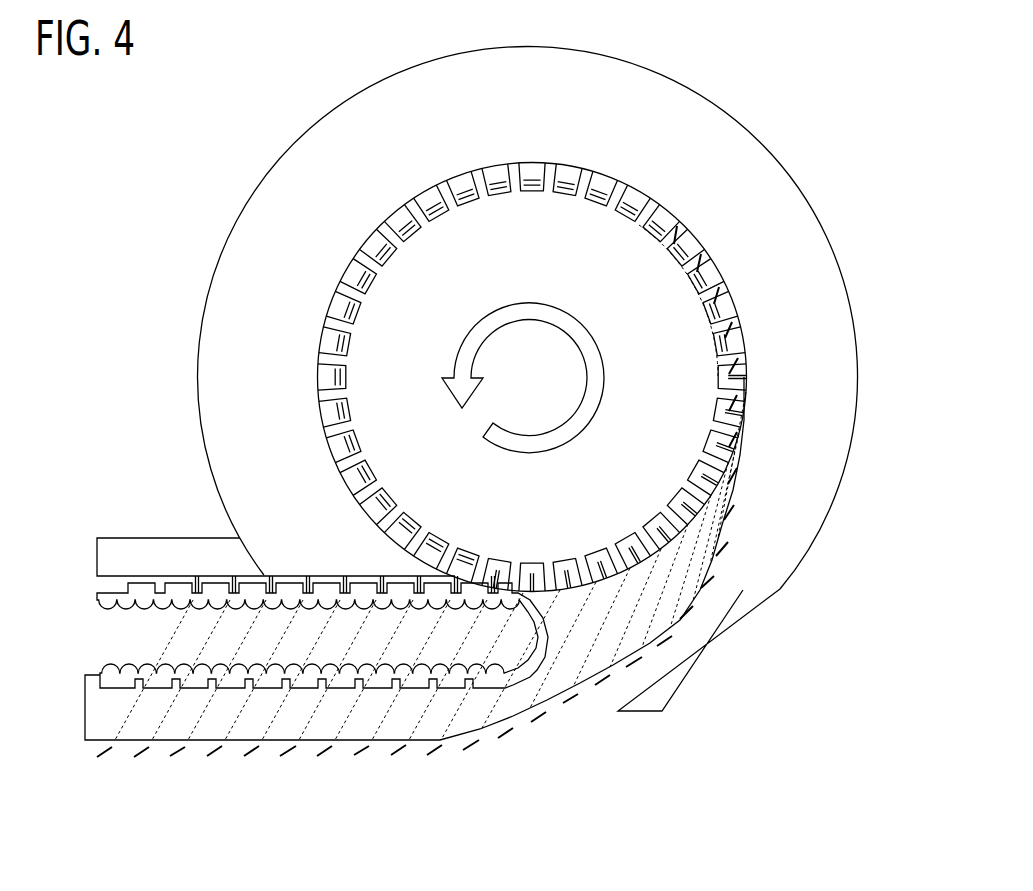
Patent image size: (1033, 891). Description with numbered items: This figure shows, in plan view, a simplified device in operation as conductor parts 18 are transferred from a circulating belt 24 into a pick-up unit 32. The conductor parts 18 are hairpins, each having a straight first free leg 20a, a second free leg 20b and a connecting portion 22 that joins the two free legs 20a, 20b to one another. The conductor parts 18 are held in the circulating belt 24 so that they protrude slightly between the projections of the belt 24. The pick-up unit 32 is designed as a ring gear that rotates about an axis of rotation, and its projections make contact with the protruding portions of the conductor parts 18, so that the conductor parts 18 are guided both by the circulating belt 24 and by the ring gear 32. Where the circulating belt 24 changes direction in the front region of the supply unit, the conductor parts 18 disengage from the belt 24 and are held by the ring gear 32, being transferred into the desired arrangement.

The conductor parts 18 is at (172, 634).
The first free leg 20a is at (302, 576).
The second free leg 20b is at (112, 747).
The connecting portion 22 is at (127, 715).
The circulating belt 24 is at (180, 590).
The pick-up unit 32 is at (360, 378).